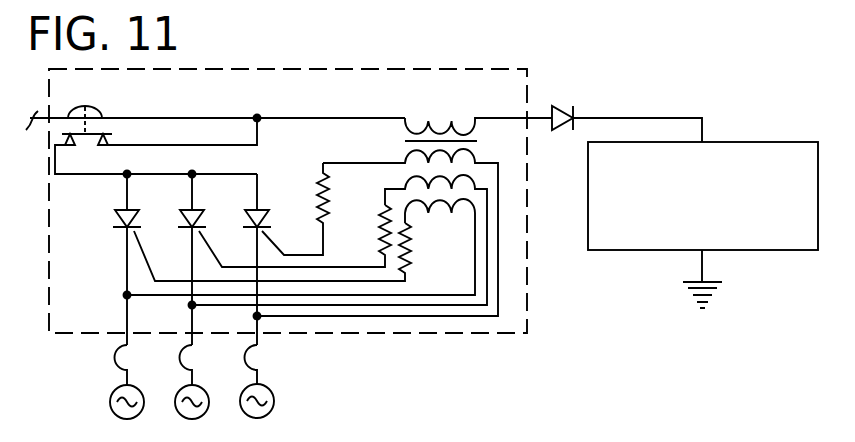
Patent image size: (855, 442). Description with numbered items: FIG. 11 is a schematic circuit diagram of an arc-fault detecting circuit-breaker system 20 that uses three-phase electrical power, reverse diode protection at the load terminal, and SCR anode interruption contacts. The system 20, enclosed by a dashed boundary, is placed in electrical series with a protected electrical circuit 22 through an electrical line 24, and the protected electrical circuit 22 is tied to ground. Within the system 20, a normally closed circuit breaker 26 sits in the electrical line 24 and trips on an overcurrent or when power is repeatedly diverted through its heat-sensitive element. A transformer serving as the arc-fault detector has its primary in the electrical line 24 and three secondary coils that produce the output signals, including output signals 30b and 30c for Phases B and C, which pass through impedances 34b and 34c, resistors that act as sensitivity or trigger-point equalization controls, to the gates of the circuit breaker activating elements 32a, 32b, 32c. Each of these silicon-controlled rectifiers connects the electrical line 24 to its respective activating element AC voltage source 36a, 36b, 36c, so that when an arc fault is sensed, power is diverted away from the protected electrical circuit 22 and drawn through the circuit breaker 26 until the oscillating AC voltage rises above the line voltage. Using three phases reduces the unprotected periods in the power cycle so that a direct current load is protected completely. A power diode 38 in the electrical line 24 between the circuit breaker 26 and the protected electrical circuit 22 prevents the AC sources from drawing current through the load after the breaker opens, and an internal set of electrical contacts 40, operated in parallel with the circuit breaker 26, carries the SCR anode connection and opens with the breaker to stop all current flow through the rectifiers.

The arc-fault detecting circuit-breaker system 20 is at (533, 75).
The protected electrical circuit 22 is at (763, 140).
The electrical line 24 is at (669, 116).
The circuit breaker 26 is at (90, 108).
The output signal 30b is at (383, 202).
The output signal 30c is at (320, 171).
The circuit breaker activating element 32a is at (115, 214).
The circuit breaker activating element 32b is at (180, 215).
The circuit breaker activating element 32c is at (245, 215).
The impedance 34b is at (372, 218).
The impedance 34c is at (318, 203).
The activating element AC voltage source 36a is at (110, 396).
The activating element AC voltage source 36b is at (204, 392).
The activating element AC voltage source 36c is at (273, 396).
The power diode 38 is at (559, 105).
The set of electrical contacts 40 is at (122, 132).